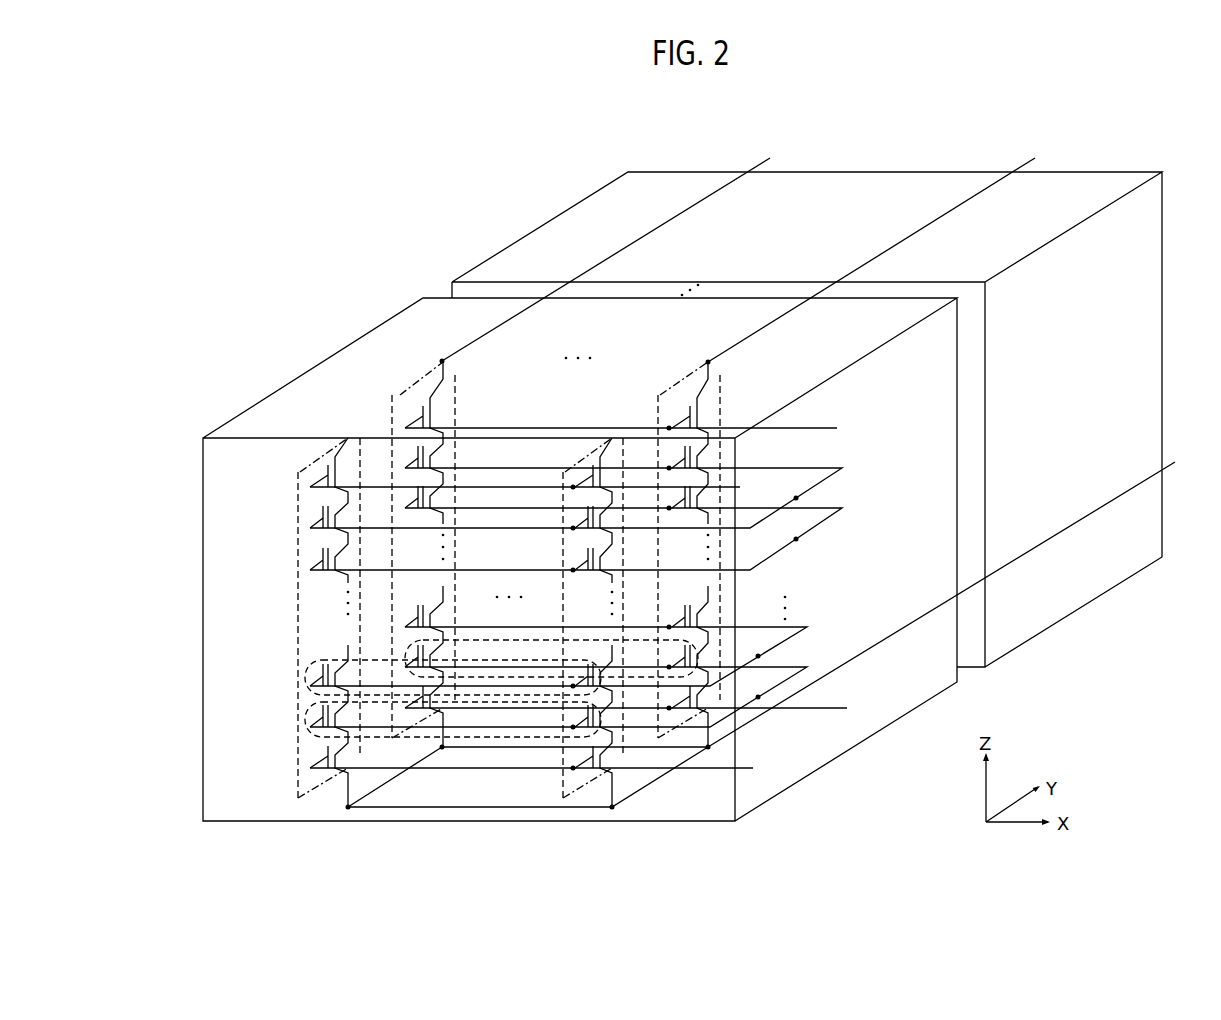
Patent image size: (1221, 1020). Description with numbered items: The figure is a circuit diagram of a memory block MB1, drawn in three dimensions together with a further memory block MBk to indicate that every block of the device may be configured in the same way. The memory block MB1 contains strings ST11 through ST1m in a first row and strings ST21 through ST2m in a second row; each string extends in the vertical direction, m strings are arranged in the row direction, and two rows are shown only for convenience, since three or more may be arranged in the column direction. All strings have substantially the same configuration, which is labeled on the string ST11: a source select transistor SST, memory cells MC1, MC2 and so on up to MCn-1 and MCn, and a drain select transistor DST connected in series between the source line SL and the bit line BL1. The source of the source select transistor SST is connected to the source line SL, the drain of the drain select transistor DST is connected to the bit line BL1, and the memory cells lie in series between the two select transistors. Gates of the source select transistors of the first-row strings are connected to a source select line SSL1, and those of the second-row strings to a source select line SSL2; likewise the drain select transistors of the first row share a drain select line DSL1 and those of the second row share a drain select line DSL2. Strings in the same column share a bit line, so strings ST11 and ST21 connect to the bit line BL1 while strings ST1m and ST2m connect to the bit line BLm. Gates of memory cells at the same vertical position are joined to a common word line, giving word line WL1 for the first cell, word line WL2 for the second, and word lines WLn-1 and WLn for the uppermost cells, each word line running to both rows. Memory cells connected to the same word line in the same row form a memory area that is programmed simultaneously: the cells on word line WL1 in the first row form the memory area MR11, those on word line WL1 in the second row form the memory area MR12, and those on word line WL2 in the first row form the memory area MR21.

The memory block MB1 is at (316, 367).
The memory block MBk is at (540, 228).
The bit line BL1 is at (620, 246).
The bit line BLm is at (886, 246).
The source line SL is at (774, 629).
The string ST11 is at (330, 451).
The string ST1m is at (596, 450).
The string ST21 is at (423, 393).
The string ST2m is at (689, 378).
The drain select transistor DST is at (306, 479).
The memory cell MCn is at (306, 517).
The memory cell MCn-1 is at (306, 558).
The memory cell MC2 is at (308, 662).
The memory cell MC1 is at (308, 712).
The source select transistor SST is at (308, 755).
The memory area MR21 is at (305, 678).
The memory area MR11 is at (305, 720).
The memory area MR12 is at (403, 658).
The drain select line DSL1 is at (551, 488).
The drain select line DSL2 is at (647, 428).
The word line WLn is at (796, 498).
The word line WLn-1 is at (796, 539).
The word line WL2 is at (758, 656).
The word line WL1 is at (758, 697).
The source select line SSL1 is at (555, 768).
The source select line SSL2 is at (649, 708).